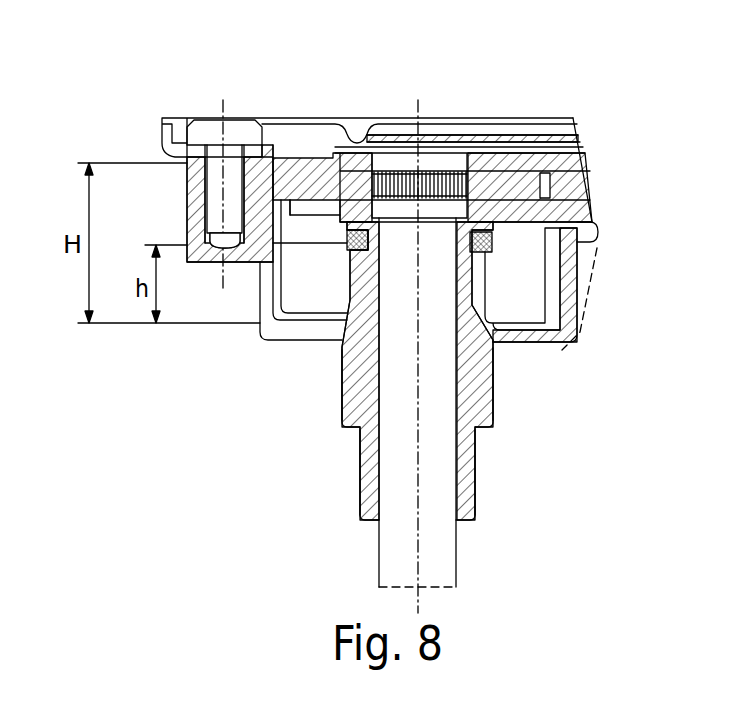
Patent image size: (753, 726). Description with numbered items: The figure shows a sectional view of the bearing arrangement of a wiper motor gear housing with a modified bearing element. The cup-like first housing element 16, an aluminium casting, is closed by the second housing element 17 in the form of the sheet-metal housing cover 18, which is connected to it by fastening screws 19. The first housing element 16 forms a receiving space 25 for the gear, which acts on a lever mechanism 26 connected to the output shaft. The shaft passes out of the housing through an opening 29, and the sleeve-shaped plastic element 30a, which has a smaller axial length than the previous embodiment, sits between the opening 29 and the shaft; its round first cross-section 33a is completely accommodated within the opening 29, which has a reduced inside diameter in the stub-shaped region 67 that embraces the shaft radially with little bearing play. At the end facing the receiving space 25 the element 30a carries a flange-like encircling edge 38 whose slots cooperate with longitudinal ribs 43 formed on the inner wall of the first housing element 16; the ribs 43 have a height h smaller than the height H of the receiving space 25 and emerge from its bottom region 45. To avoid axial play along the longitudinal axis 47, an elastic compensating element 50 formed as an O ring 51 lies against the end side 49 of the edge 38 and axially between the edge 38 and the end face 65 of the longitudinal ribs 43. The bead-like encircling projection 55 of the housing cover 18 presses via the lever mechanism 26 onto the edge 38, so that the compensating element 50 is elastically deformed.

The first housing element 16 is at (470, 493).
The second housing element 17 is at (327, 122).
The housing cover 18 is at (582, 170).
The fastening screws 19 is at (203, 120).
The receiving space 25 is at (299, 214).
The lever mechanism 26 is at (585, 160).
The opening 29 is at (460, 453).
The element 30a is at (548, 335).
The first cross-section 33a is at (343, 340).
The edge 38 is at (517, 233).
The longitudinal ribs 43 is at (347, 282).
The bottom region 45 is at (312, 275).
The longitudinal axis 47 is at (417, 533).
The end side 49 is at (396, 172).
The compensating element 50 is at (498, 238).
The O ring 51 is at (481, 242).
The projection 55 is at (353, 143).
The end face 65 is at (604, 302).
The stub-shaped region 67 is at (376, 483).